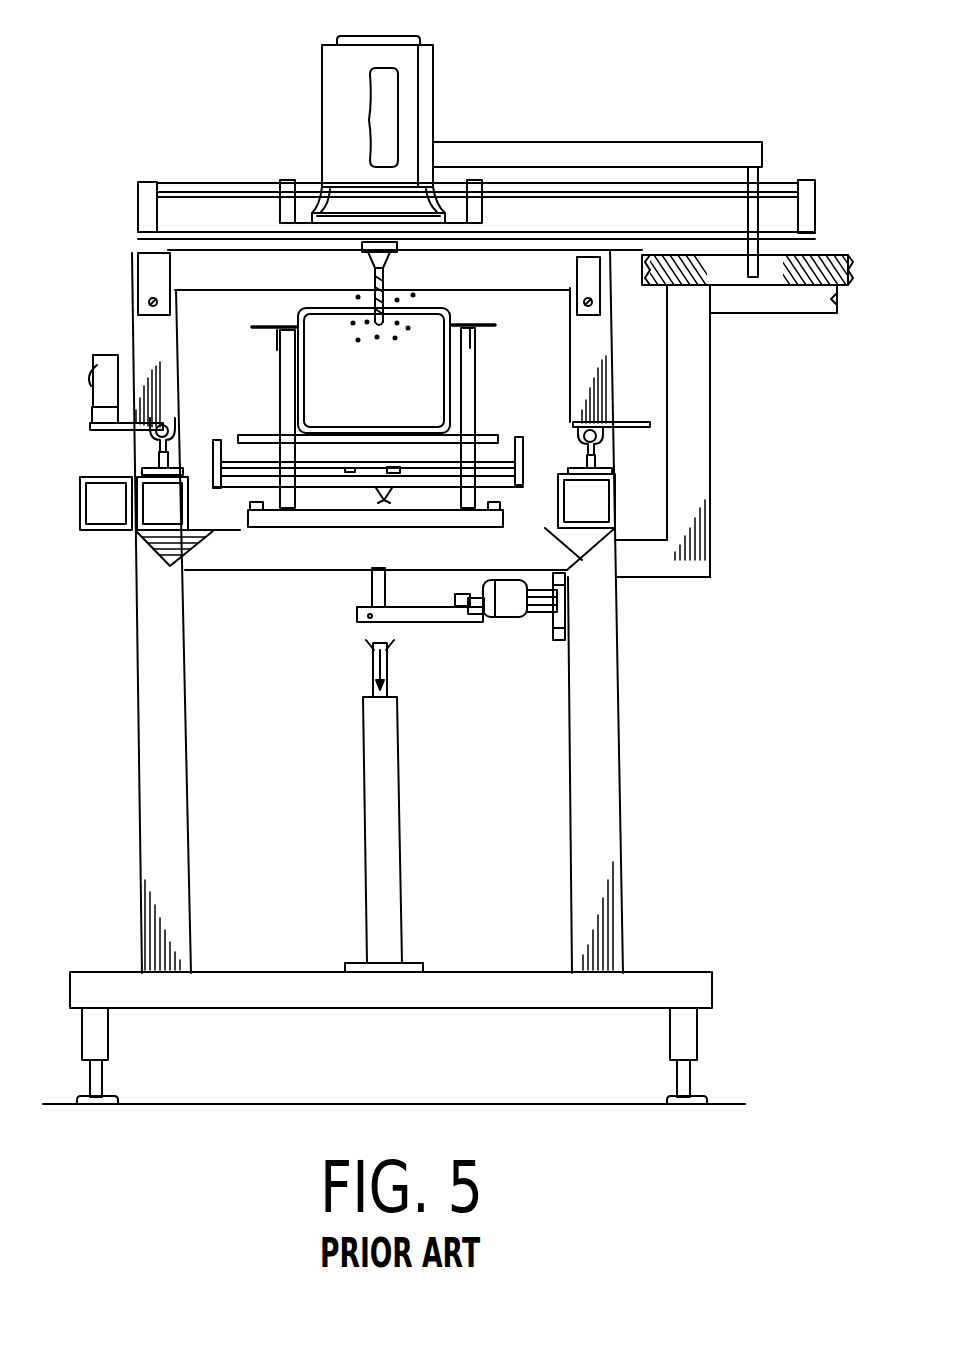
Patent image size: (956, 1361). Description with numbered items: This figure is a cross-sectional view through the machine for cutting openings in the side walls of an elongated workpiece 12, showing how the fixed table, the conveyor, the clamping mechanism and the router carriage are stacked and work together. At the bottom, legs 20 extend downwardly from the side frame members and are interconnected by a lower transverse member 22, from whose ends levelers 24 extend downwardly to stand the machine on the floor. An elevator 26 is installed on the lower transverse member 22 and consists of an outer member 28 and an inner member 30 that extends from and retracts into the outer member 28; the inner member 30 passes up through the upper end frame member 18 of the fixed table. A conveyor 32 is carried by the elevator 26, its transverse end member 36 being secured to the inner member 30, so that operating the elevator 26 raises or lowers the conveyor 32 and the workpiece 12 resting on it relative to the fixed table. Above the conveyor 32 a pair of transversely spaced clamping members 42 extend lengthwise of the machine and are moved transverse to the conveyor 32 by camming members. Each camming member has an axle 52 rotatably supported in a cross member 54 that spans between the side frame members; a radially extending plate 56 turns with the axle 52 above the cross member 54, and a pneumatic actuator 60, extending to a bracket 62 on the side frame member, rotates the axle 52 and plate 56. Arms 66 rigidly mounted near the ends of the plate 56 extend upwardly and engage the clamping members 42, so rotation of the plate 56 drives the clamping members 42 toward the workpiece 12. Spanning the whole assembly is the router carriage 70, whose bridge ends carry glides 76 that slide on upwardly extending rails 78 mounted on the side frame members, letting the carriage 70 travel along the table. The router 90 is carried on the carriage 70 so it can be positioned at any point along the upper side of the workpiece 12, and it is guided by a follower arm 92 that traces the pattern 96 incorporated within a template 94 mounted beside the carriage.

The workpiece 12 is at (298, 367).
The upper end frame member 18 is at (170, 565).
The leg 20 is at (150, 748).
The lower transverse member 22 is at (263, 987).
The leveler 24 is at (90, 1035).
The elevator 26 is at (418, 780).
The outer member 28 is at (385, 880).
The inner member 30 is at (373, 678).
The conveyor 32 is at (520, 496).
The transverse end member 36 is at (482, 450).
The clamping member 42 is at (262, 327).
The axle 52 is at (372, 585).
The cross member 54 is at (430, 612).
The radially extending plate 56 is at (285, 518).
The pneumatic actuator 60 is at (507, 617).
The bracket 62 is at (555, 612).
The arm 66 is at (285, 393).
The router carriage 70 is at (128, 172).
The glide 76 is at (160, 430).
The rail 78 is at (158, 462).
The router 90 is at (412, 78).
The follower arm 92 is at (637, 145).
The template 94 is at (830, 250).
The pattern 96 is at (775, 273).